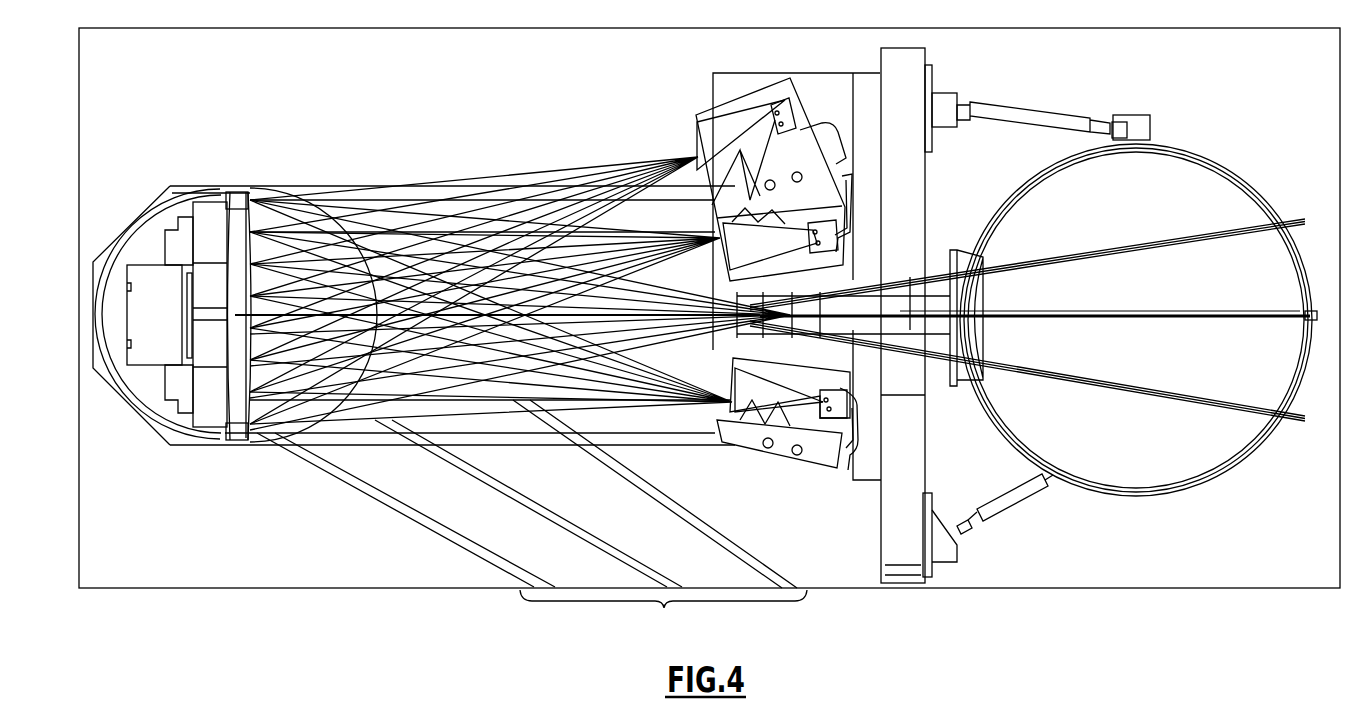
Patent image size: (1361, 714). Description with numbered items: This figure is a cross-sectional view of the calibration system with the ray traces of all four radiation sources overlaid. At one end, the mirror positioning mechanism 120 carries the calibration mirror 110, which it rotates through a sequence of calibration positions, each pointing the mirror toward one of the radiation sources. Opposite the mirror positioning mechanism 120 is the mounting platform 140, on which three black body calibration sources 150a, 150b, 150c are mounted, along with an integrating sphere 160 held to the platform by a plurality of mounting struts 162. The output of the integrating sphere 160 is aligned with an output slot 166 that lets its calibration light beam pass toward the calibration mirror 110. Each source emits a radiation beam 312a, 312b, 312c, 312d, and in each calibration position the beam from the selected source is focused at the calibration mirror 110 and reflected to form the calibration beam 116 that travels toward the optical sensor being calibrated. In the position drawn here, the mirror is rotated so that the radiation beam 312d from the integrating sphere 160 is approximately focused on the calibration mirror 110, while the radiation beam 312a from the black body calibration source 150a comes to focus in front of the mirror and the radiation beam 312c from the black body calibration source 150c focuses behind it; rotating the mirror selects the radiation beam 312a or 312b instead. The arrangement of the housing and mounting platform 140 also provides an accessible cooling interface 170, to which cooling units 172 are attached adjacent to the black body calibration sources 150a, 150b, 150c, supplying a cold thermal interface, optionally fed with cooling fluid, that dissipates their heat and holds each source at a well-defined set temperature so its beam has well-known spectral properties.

The calibration mirror 110 is at (234, 208).
The calibration beam 116 is at (663, 615).
The mirror positioning mechanism 120 is at (148, 245).
The mounting platform 140 is at (906, 47).
The black body calibration source 150a is at (694, 116).
The black body calibration source 150b is at (744, 249).
The black body calibration source 150c is at (768, 403).
The integrating sphere 160 is at (1202, 442).
The mounting struts 162 is at (1010, 102).
The output slot 166 is at (937, 390).
The cooling interface 170 is at (852, 164).
The cooling units 172 is at (807, 162).
The radiation beam 312a is at (624, 157).
The radiation beam 312b is at (679, 216).
The radiation beam 312c is at (685, 420).
The radiation beam 312d is at (988, 348).